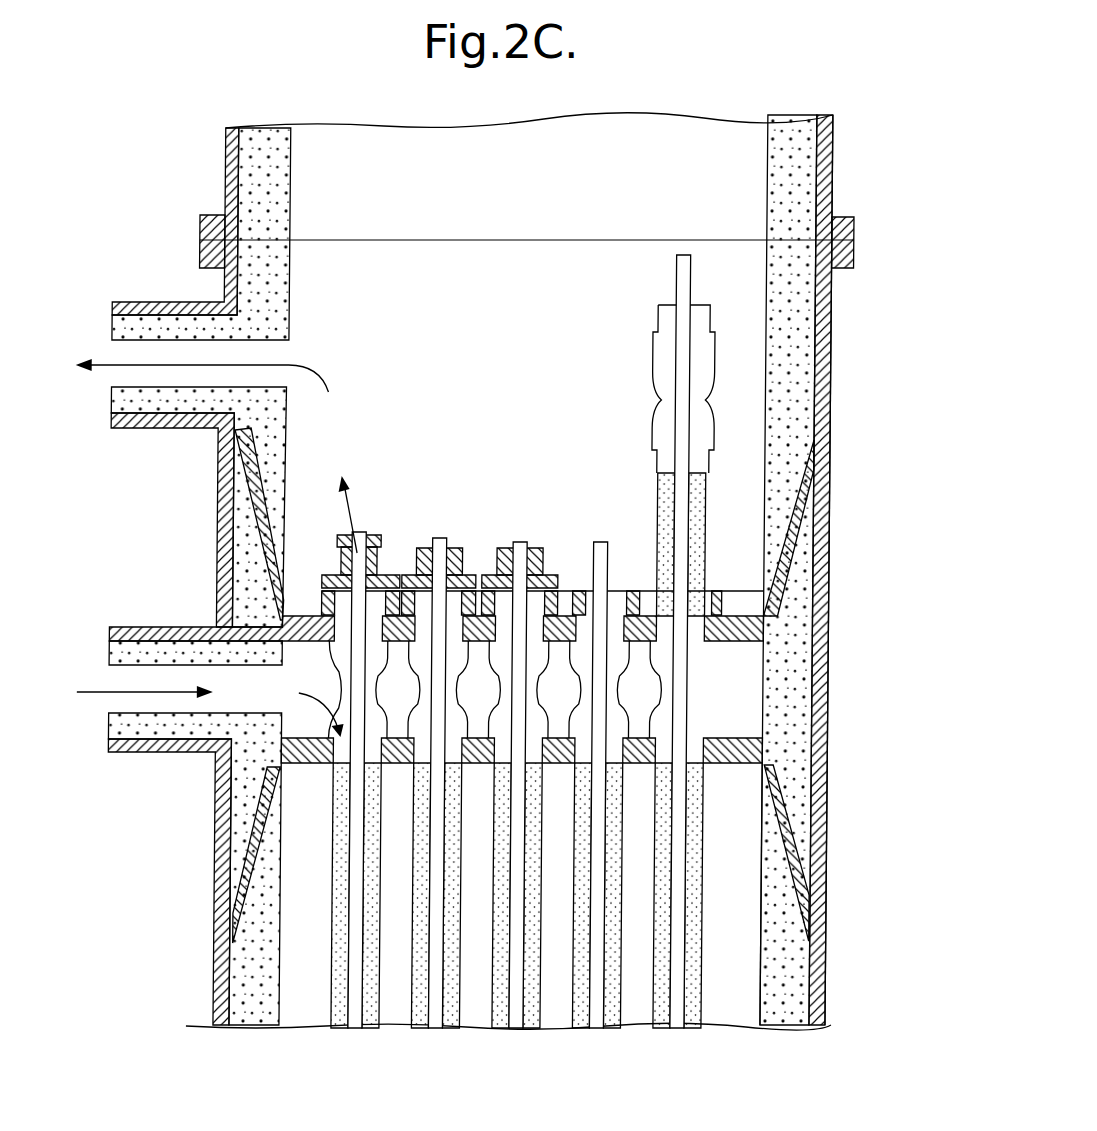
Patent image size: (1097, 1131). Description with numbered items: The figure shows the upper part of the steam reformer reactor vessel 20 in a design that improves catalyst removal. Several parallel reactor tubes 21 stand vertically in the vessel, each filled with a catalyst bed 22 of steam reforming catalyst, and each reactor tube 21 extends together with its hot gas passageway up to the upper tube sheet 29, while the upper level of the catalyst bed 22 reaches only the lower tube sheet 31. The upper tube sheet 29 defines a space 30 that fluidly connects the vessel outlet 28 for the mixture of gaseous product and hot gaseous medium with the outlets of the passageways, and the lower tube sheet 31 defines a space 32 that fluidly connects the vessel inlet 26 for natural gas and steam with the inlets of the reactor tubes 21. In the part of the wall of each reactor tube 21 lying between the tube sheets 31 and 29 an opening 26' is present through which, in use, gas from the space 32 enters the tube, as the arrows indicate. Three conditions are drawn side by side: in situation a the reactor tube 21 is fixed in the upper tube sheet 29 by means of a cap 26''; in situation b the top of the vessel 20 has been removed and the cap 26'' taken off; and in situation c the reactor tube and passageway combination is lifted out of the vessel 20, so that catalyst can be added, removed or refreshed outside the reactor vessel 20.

The reactor vessel 20 is at (828, 853).
The reactor tube 21 is at (704, 981).
The catalyst bed 22 is at (700, 902).
The vessel inlet 26 is at (209, 820).
The opening 26' is at (629, 389).
The cap 26'' is at (544, 520).
The vessel outlet 28 is at (165, 427).
The upper tube sheet 29 is at (755, 629).
The space 30 is at (745, 198).
The lower tube sheet 31 is at (749, 755).
The space 32 is at (744, 707).
The situation a is at (530, 1015).
The situation b is at (612, 1015).
The situation c is at (692, 1015).